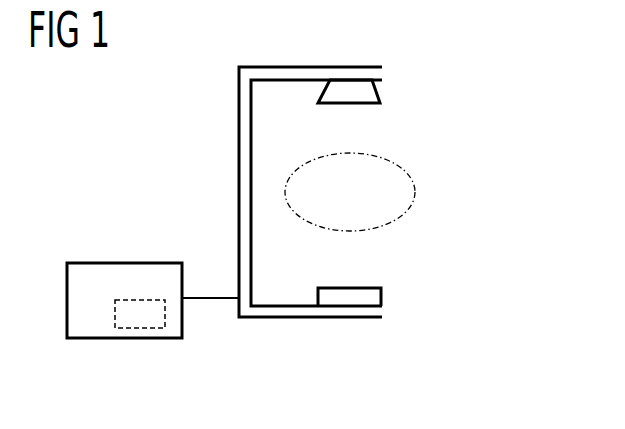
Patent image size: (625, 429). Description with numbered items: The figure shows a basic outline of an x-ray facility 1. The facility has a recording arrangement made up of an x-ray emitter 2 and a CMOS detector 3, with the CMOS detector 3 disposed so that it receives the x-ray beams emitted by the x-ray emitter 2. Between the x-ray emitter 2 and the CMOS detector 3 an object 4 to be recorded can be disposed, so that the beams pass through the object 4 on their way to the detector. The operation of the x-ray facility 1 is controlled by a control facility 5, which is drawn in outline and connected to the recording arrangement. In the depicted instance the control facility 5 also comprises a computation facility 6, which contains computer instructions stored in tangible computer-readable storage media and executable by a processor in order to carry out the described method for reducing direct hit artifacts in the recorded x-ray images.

The x-ray facility 1 is at (515, 97).
The x-ray emitter 2 is at (380, 92).
The CMOS detector 3 is at (382, 297).
The object 4 is at (415, 187).
The control facility 5 is at (121, 263).
The computation facility 6 is at (140, 328).